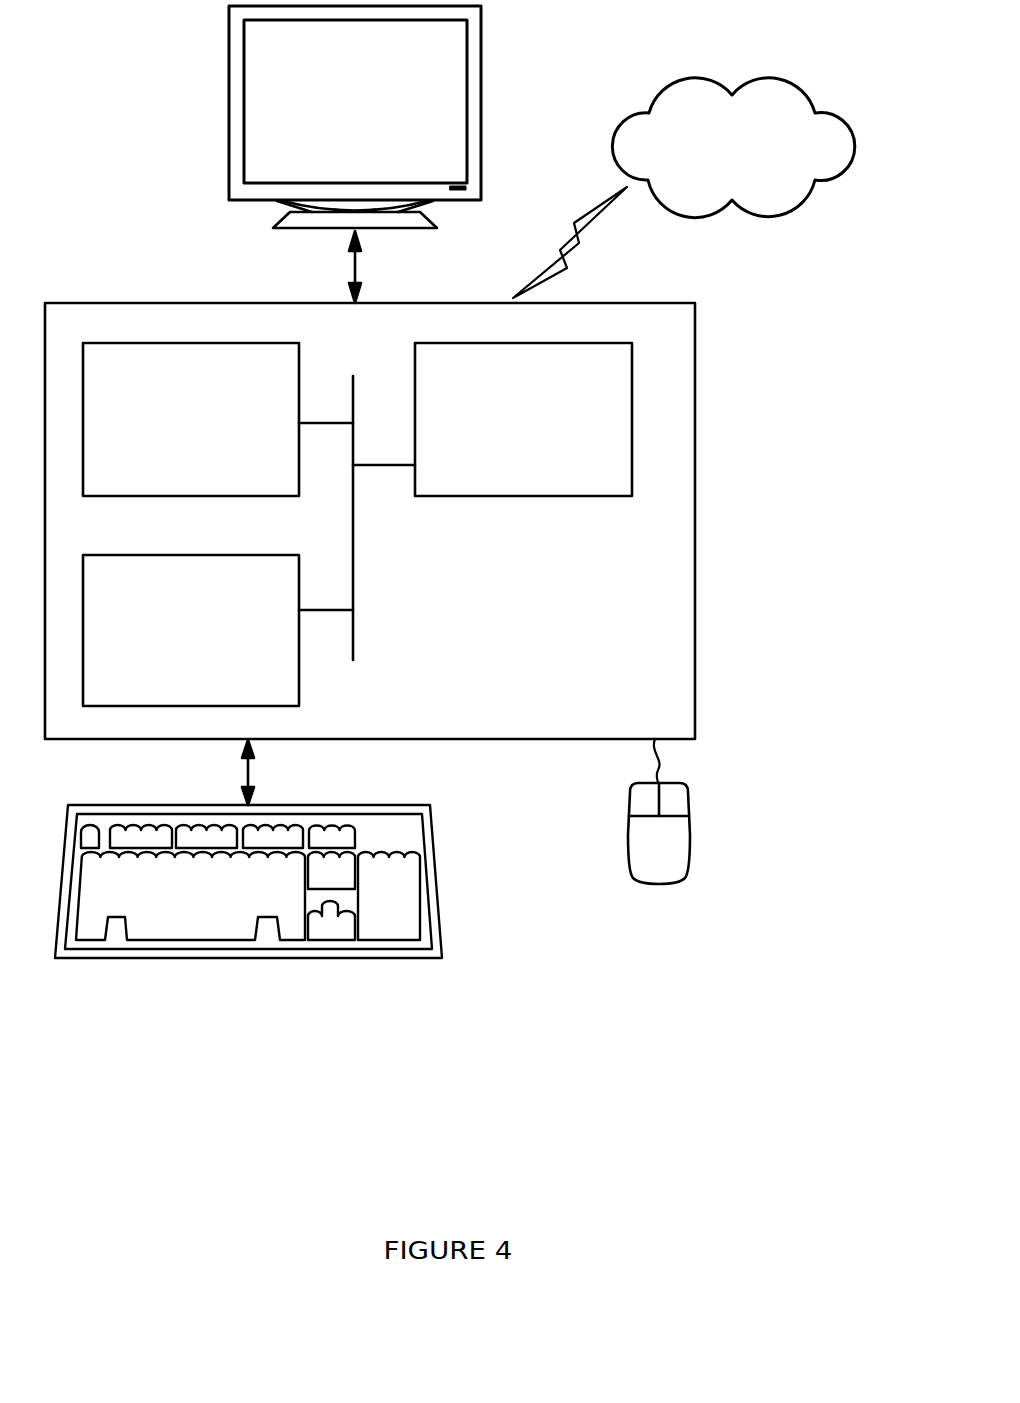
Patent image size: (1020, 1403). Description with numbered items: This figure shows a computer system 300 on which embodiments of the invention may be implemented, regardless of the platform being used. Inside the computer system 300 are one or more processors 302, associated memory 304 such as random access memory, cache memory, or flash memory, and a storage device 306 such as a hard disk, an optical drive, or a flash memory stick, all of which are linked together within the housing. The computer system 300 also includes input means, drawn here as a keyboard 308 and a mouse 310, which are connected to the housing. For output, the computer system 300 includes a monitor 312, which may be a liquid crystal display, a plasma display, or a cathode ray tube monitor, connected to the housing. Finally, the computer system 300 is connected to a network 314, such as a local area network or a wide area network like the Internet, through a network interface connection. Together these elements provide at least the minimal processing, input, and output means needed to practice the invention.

The computer system 300 is at (742, 313).
The processor 302 is at (520, 432).
The memory 304 is at (171, 434).
The storage device 306 is at (167, 641).
The keyboard 308 is at (163, 920).
The mouse 310 is at (638, 857).
The monitor 312 is at (335, 124).
The network 314 is at (712, 165).